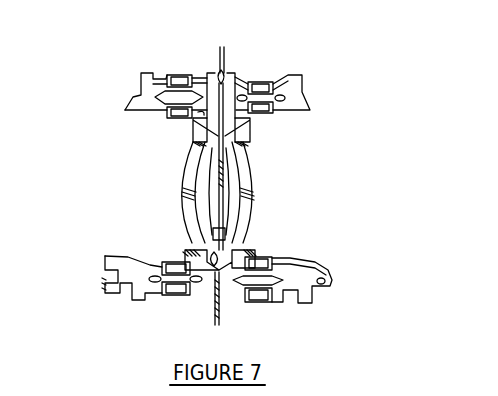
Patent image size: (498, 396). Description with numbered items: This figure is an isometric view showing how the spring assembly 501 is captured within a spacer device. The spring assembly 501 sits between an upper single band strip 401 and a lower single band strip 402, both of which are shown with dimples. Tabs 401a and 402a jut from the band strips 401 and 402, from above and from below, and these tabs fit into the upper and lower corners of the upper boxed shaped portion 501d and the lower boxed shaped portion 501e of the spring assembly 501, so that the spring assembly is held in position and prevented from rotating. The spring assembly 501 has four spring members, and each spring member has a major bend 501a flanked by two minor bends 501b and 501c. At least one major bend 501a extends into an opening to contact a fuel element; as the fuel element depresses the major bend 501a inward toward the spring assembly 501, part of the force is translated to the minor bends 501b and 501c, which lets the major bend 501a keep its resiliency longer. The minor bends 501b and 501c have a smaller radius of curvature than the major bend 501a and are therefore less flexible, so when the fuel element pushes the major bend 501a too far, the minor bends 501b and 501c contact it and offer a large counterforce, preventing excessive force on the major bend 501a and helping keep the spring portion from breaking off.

The upper single band strip 401 is at (224, 48).
The tab 401a is at (218, 280).
The lower single band strip 402 is at (304, 97).
The tab 402a is at (182, 252).
The spring assembly 501 is at (294, 194).
The major bend 501a is at (252, 188).
The minor bend 501b is at (248, 146).
The minor bend 501c is at (240, 252).
The upper boxed shaped portion 501d is at (189, 133).
The lower boxed shaped portion 501e is at (186, 257).